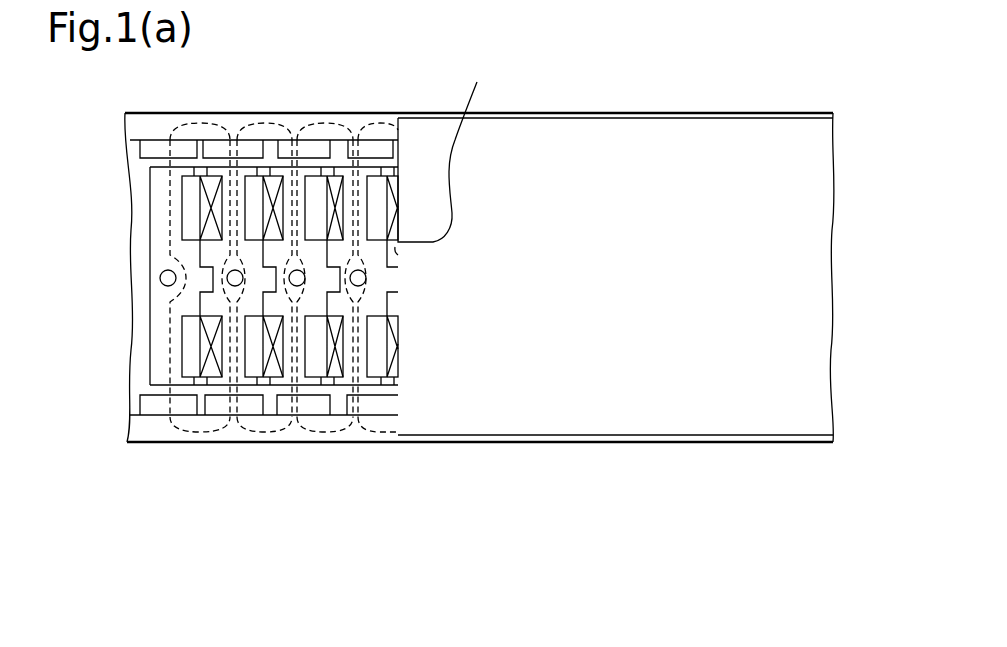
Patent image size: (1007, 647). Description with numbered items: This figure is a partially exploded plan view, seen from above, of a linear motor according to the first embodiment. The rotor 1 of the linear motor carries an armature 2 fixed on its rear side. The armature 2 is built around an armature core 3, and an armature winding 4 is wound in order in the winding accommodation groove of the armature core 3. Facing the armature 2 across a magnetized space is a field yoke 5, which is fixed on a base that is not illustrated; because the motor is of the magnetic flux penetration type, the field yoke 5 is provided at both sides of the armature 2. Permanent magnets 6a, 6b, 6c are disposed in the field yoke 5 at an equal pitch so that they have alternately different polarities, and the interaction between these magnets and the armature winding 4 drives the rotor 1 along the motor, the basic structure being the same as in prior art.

The rotor 1 is at (813, 247).
The armature 2 is at (490, 78).
The armature core 3 is at (350, 180).
The armature winding 4 is at (320, 378).
The field yoke 5 is at (172, 432).
The permanent magnet 6a is at (373, 407).
The permanent magnet 6b is at (303, 407).
The permanent magnet 6c is at (217, 410).